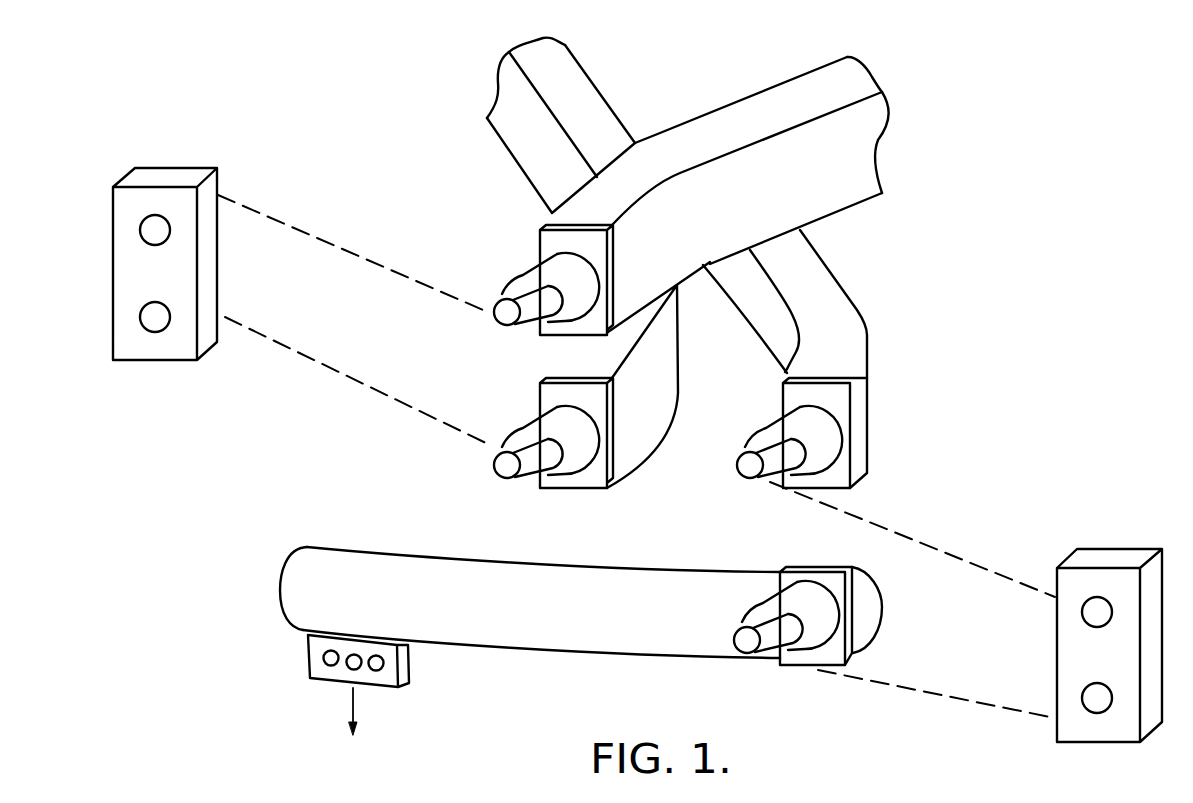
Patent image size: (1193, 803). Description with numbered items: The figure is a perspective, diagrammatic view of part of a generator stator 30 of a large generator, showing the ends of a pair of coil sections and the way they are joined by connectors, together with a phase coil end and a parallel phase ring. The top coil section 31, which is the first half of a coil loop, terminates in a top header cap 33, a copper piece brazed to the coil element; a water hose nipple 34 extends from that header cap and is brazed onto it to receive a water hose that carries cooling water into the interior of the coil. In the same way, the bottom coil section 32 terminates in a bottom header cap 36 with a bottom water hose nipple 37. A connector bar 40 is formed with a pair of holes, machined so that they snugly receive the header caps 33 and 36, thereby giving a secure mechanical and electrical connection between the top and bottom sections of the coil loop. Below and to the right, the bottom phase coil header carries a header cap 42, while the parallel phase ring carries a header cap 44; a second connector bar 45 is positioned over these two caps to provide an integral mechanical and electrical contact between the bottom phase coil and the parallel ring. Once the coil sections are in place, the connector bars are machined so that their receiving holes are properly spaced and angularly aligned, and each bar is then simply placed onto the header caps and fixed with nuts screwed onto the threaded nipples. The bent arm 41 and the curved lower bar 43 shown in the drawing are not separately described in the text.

The generator stator 30 is at (673, 109).
The top coil section 31 is at (840, 213).
The bottom coil section 32 is at (673, 408).
The top header cap 33 is at (537, 275).
The water hose nipple 34 is at (512, 295).
The bottom header cap 36 is at (565, 477).
The bottom water hose nipple 37 is at (512, 447).
The connector bar 40 is at (128, 175).
The bent arm with terminal block 41 is at (860, 397).
The header cap 42 is at (817, 485).
The main lead bar 43 is at (617, 658).
The header cap 44 is at (807, 637).
The connector bar 45 is at (1097, 550).